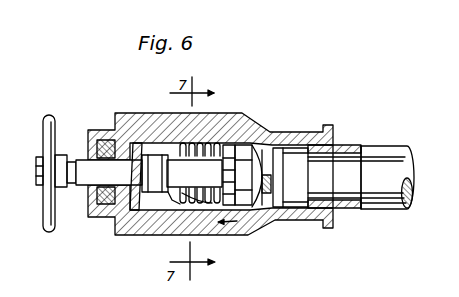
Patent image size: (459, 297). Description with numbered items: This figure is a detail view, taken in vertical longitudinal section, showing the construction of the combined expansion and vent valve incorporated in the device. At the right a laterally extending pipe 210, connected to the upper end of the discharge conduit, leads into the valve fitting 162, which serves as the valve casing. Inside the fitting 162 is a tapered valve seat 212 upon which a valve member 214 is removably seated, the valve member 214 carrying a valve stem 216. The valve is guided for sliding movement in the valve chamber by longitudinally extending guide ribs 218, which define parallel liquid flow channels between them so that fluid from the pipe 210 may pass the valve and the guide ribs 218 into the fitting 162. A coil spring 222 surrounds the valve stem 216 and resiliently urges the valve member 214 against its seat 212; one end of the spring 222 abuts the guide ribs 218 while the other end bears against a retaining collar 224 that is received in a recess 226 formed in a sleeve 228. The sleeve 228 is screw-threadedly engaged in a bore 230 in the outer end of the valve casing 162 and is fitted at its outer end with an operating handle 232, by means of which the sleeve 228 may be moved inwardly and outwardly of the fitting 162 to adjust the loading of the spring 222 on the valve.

The valve fitting 162 is at (207, 228).
The pipe 210 is at (382, 156).
The tapered valve seat 212 is at (263, 144).
The valve member 214 is at (288, 182).
The valve stem 216 is at (172, 192).
The guide ribs 218 is at (244, 145).
The coil spring 222 is at (206, 146).
The retaining collar 224 is at (160, 222).
The recess 226 is at (162, 179).
The sleeve 228 is at (149, 140).
The bore 230 is at (136, 142).
The operating handle 232 is at (53, 115).